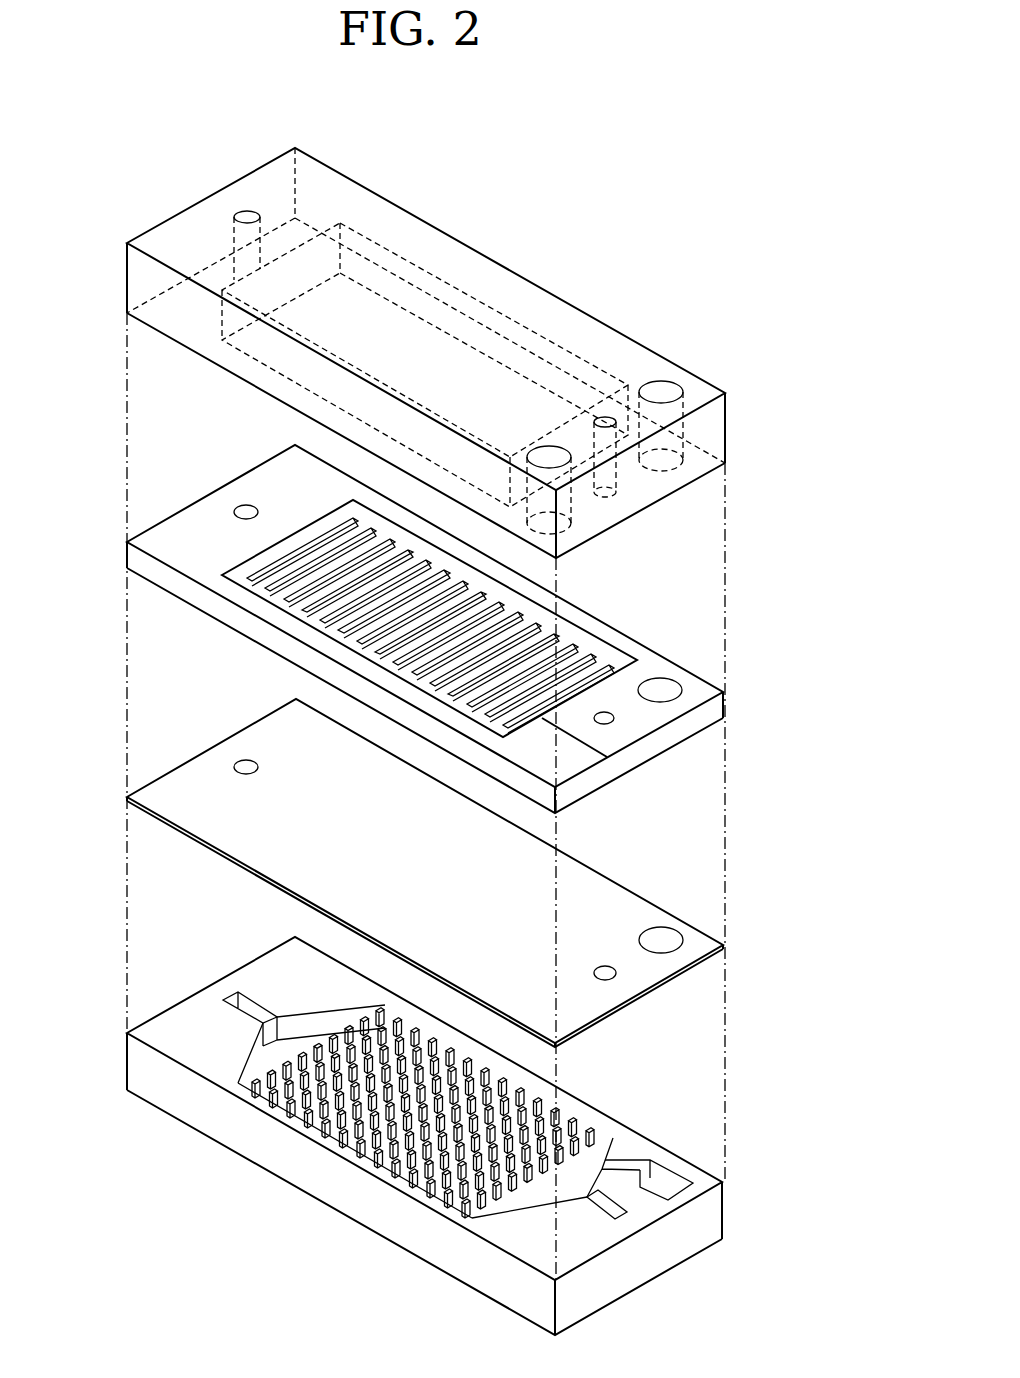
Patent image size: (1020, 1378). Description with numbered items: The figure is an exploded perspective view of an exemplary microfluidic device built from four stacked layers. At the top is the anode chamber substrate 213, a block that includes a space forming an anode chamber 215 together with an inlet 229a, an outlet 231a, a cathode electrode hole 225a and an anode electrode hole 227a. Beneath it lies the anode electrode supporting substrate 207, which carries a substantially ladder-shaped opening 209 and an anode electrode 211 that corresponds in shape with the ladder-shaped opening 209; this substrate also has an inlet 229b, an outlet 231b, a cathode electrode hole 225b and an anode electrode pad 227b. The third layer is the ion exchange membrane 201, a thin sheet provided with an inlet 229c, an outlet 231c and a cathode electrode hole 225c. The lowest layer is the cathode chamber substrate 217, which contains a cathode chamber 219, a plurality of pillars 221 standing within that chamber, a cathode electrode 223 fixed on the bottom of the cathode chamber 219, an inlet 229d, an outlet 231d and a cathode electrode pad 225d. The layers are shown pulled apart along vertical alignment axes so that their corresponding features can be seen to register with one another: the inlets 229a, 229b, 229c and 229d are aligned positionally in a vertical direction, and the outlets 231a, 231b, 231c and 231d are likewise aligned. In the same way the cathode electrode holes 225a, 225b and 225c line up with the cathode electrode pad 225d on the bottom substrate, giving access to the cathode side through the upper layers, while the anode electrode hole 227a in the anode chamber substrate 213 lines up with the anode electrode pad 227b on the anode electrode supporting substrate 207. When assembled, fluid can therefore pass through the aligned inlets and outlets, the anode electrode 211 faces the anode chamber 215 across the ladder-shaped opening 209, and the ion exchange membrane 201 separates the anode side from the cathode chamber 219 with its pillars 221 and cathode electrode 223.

The ion exchange membrane 201 is at (725, 950).
The anode electrode supporting substrate 207 is at (723, 705).
The ladder-shaped opening 209 is at (585, 660).
The anode electrode 211 is at (568, 630).
The anode chamber substrate 213 is at (727, 428).
The anode chamber 215 is at (385, 243).
The cathode chamber substrate 217 is at (722, 1215).
The cathode chamber 219 is at (275, 1050).
The pillars 221 is at (500, 1225).
The cathode electrode 223 is at (568, 1190).
The cathode electrode hole 225a is at (661, 390).
The cathode electrode hole 225b is at (666, 688).
The cathode electrode hole 225c is at (668, 938).
The cathode electrode pad 225d is at (670, 1182).
The anode electrode hole 227a is at (549, 455).
The anode electrode pad 227b is at (580, 758).
The inlet 229a is at (247, 213).
The inlet 229b is at (246, 510).
The inlet 229c is at (246, 765).
The inlet 229d is at (237, 1000).
The outlet 231a is at (605, 420).
The outlet 231b is at (606, 720).
The outlet 231c is at (606, 975).
The outlet 231d is at (610, 1205).